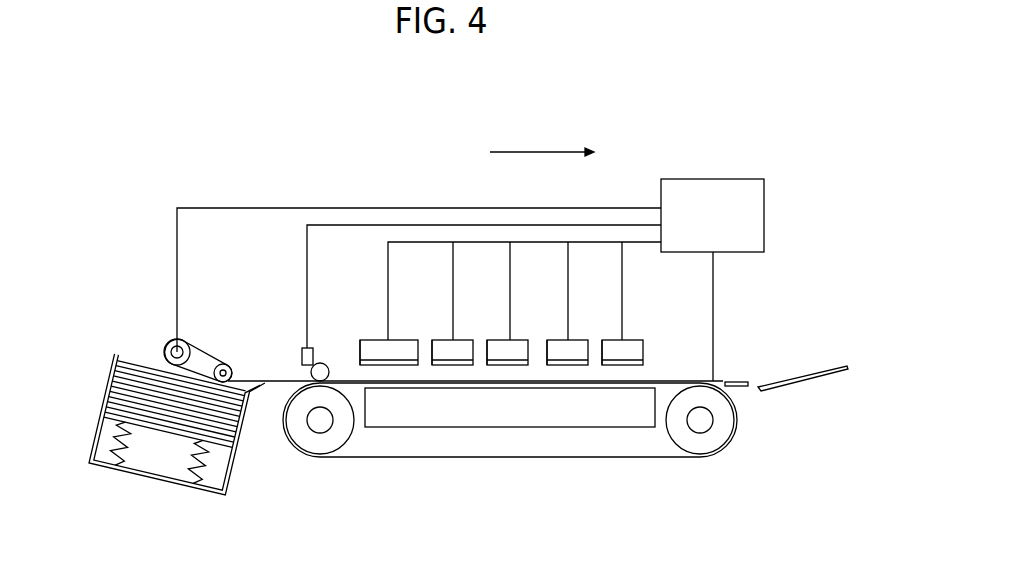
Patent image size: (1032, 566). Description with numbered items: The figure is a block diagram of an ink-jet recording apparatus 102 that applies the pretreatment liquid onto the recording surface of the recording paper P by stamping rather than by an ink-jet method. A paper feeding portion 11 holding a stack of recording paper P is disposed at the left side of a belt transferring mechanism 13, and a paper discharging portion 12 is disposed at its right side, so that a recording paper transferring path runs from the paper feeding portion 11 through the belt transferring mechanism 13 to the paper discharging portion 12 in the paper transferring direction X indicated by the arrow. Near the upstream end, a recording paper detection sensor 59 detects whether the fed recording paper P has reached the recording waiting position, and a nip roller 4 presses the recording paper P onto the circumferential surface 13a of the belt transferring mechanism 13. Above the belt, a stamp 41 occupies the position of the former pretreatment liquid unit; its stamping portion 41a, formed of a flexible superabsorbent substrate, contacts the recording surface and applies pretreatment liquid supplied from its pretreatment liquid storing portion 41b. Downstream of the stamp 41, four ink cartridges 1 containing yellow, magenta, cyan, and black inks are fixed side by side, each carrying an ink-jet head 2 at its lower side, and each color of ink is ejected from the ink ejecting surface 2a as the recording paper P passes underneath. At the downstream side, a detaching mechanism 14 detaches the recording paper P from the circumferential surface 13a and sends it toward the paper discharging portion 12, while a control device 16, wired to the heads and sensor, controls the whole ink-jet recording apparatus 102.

The ink cartridge 1 is at (532, 332).
The ink-jet head 2 is at (436, 355).
The ink ejecting surface 2a is at (398, 366).
The nip roller 4 is at (326, 365).
The paper feeding portion 11 is at (203, 320).
The paper discharging portion 12 is at (817, 350).
The belt transferring mechanism 13 is at (497, 450).
The circumferential surface 13a is at (398, 462).
The detaching mechanism 14 is at (737, 381).
The control device 16 is at (727, 187).
The stamp 41 is at (385, 332).
The stamping portion 41a is at (391, 366).
The pretreatment liquid storing portion 41b is at (368, 350).
The recording paper detection sensor 59 is at (315, 351).
The ink-jet recording apparatus 102 is at (803, 130).
The recording paper P is at (137, 357).
The paper transferring direction X is at (540, 152).